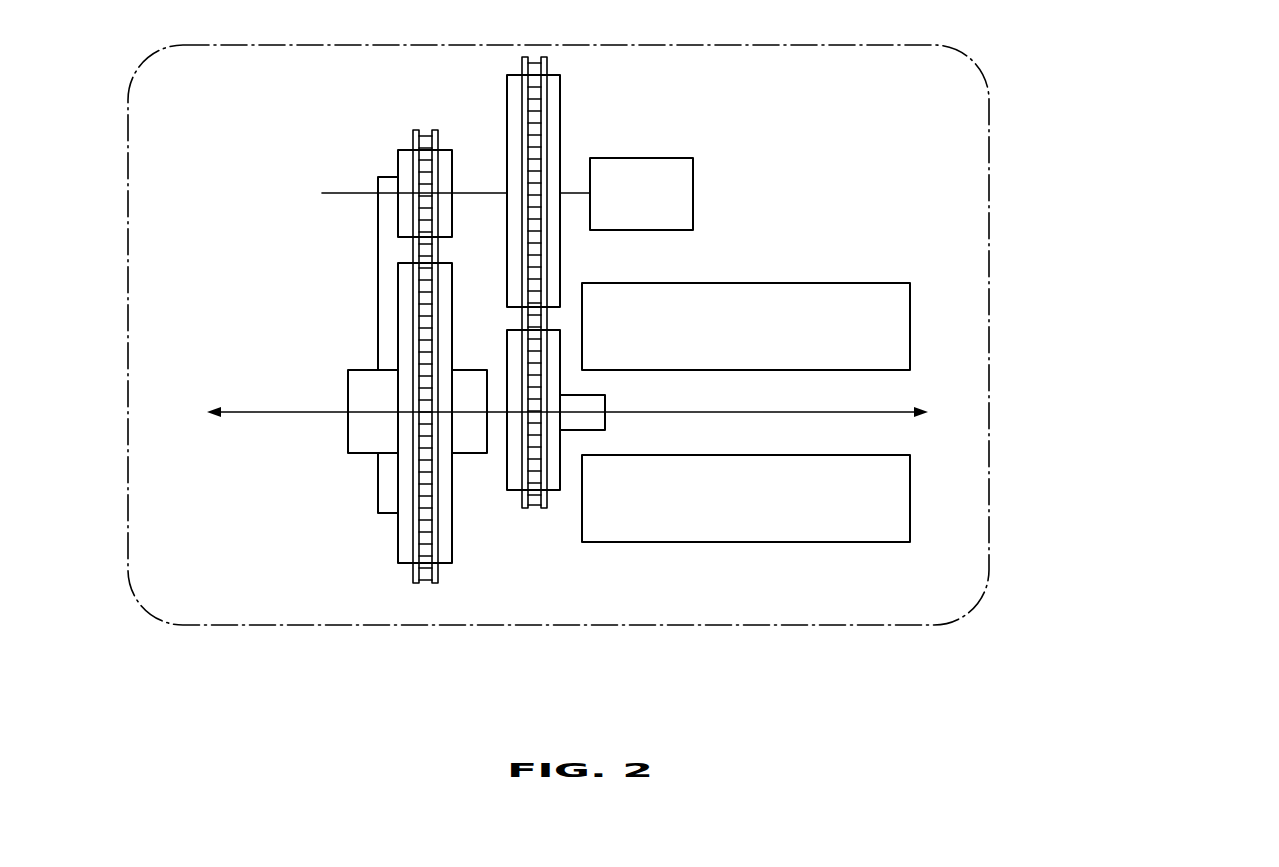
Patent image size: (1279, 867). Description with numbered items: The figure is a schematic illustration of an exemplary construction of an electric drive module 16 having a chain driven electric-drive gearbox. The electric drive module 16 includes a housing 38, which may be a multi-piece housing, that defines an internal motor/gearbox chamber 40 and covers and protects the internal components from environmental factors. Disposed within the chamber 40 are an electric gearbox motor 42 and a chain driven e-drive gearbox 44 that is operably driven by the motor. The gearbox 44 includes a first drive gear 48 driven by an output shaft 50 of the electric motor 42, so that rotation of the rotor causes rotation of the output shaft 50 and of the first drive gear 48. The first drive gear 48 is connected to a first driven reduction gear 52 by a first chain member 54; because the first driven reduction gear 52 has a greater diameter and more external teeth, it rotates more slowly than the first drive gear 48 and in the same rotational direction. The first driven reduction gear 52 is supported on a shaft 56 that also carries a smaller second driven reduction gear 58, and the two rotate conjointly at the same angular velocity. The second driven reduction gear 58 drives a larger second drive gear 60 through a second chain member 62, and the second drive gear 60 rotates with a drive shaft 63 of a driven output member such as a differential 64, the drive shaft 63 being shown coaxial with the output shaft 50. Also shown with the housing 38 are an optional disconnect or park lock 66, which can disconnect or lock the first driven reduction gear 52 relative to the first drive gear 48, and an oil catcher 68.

The electric drive module 16 is at (1110, 210).
The housing 38 is at (989, 440).
The internal motor/gearbox chamber 40 is at (183, 153).
The electric gearbox motor 42 is at (910, 505).
The gearbox 44 is at (278, 573).
The first drive gear 48 is at (560, 480).
The output shaft 50 is at (606, 405).
The first driven reduction gear 52 is at (548, 116).
The first chain member 54 is at (547, 322).
The shaft 56 is at (468, 192).
The second driven reduction gear 58 is at (398, 165).
The second drive gear 60 is at (378, 498).
The second chain member 62 is at (415, 257).
The drive shaft 63 is at (348, 386).
The differential 64 is at (346, 438).
The disconnect or park lock 66 is at (693, 197).
The oil catcher 68 is at (378, 265).